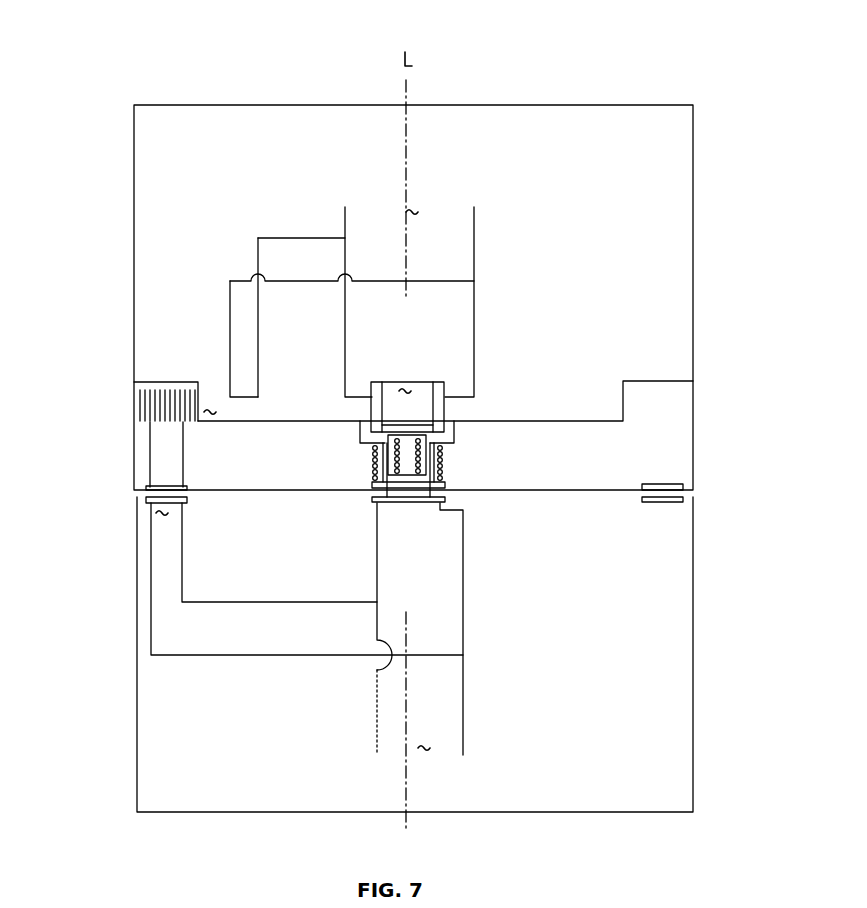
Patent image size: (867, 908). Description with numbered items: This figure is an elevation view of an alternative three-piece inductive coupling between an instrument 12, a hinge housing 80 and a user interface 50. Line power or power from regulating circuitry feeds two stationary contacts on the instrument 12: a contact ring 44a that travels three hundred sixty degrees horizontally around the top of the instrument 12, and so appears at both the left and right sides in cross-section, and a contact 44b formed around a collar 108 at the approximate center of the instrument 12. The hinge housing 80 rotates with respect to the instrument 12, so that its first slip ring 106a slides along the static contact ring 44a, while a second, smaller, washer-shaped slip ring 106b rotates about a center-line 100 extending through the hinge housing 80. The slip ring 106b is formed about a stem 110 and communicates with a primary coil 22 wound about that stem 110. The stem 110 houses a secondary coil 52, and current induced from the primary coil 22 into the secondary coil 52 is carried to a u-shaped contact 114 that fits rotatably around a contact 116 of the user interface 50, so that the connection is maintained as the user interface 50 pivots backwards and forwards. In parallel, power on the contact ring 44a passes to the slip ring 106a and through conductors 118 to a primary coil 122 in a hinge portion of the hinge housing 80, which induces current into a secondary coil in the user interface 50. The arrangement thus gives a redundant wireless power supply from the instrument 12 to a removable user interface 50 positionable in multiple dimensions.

The instrument 12 is at (716, 580).
The primary coil 22 is at (372, 470).
The contact ring 44a is at (145, 503).
The contact 44b is at (388, 505).
The user interface 50 is at (712, 88).
The secondary coil 52 is at (445, 470).
The hinge housing 80 is at (695, 424).
The center-line 100 is at (407, 135).
The first slip ring 106a is at (140, 490).
The second slip ring 106b is at (445, 486).
The collar 108 is at (457, 433).
The stem 110 is at (455, 440).
The contact 114 is at (437, 382).
The contact 116 is at (392, 395).
The conductors 118 is at (182, 452).
The primary coil 122 is at (138, 410).